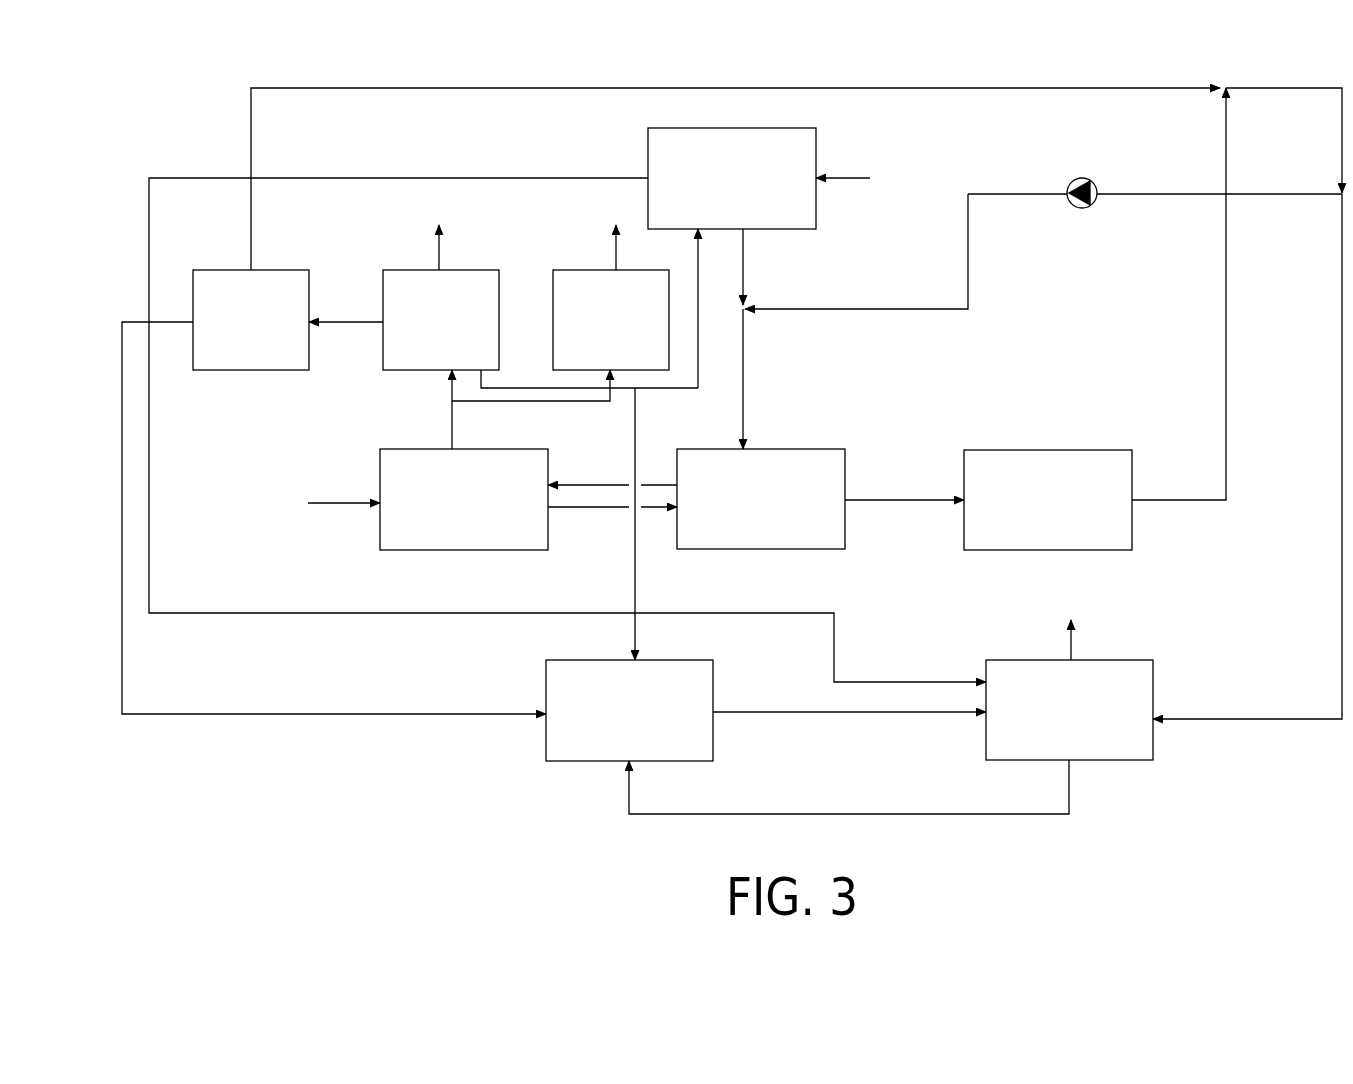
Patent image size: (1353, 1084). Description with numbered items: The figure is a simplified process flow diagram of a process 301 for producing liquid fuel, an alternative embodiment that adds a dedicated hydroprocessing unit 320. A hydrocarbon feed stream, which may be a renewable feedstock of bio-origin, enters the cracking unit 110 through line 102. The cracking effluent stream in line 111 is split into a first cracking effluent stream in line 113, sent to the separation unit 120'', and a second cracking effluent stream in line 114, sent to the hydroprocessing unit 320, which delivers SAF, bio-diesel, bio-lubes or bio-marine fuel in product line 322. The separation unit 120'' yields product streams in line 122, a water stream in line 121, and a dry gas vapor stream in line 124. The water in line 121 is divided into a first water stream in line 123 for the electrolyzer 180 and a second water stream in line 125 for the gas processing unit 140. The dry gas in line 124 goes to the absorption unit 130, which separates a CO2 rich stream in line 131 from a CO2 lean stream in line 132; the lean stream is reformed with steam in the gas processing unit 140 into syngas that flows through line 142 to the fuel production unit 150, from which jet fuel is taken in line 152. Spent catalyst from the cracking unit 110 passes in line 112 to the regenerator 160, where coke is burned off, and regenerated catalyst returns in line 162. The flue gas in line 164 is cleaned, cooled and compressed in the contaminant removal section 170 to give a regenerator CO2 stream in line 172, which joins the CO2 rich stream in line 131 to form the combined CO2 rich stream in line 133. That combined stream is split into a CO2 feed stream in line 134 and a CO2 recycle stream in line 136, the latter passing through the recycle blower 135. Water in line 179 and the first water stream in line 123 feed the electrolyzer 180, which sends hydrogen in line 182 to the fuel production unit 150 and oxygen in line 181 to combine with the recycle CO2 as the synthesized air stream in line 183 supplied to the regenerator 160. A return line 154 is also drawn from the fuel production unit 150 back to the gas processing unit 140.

The process 301 is at (155, 143).
The hydrocarbon feed stream line 102 is at (330, 503).
The cracking unit 110 is at (380, 470).
The cracking effluent stream line 111 is at (452, 441).
The spent catalyst stream line 112 is at (583, 517).
The first cracking effluent stream line 113 is at (452, 390).
The second cracking effluent stream line 114 is at (560, 403).
The separation unit 120'' is at (415, 309).
The water stream line 121 is at (526, 387).
The product line 122 is at (437, 243).
The first water stream line 123 is at (698, 348).
The vapor stream line 124 is at (348, 323).
The second water stream line 125 is at (635, 575).
The absorption unit 130 is at (273, 372).
The CO2 rich stream line 131 is at (440, 90).
The CO2 lean stream line 132 is at (283, 712).
The combined CO2 rich stream line 133 is at (1288, 90).
The CO2 feed stream line 134 is at (1246, 719).
The recycle blower 135 is at (1083, 209).
The CO2 recycle stream line 136 is at (968, 287).
The gas processing unit 140 is at (546, 676).
The syngas stream line 142 is at (769, 715).
The fuel production unit 150 is at (998, 660).
The jet fuel stream line 152 is at (1071, 653).
The recycle stream 154 is at (843, 814).
The regenerator 160 is at (693, 449).
The regenerated catalyst stream line 162 is at (585, 480).
The flue gas stream line 164 is at (893, 500).
The contaminant removal section 170 is at (1031, 450).
The regenerator CO2 stream line 172 is at (1227, 413).
The water stream line 179 is at (845, 177).
The electrolyzer 180 is at (648, 154).
The oxygen stream line 181 is at (747, 288).
The hydrogen stream line 182 is at (362, 175).
The synthesized air stream line 183 is at (747, 406).
The hydroprocessing unit 320 is at (553, 321).
The product line 322 is at (614, 243).